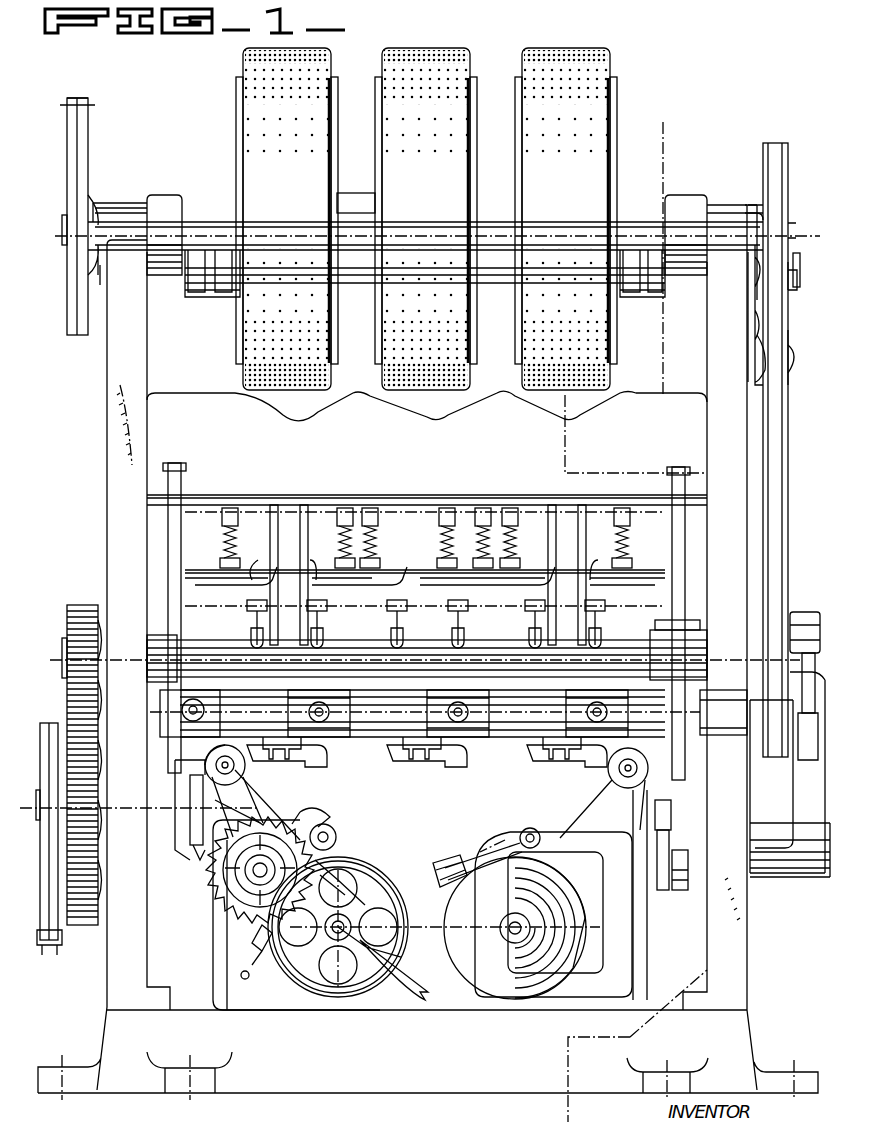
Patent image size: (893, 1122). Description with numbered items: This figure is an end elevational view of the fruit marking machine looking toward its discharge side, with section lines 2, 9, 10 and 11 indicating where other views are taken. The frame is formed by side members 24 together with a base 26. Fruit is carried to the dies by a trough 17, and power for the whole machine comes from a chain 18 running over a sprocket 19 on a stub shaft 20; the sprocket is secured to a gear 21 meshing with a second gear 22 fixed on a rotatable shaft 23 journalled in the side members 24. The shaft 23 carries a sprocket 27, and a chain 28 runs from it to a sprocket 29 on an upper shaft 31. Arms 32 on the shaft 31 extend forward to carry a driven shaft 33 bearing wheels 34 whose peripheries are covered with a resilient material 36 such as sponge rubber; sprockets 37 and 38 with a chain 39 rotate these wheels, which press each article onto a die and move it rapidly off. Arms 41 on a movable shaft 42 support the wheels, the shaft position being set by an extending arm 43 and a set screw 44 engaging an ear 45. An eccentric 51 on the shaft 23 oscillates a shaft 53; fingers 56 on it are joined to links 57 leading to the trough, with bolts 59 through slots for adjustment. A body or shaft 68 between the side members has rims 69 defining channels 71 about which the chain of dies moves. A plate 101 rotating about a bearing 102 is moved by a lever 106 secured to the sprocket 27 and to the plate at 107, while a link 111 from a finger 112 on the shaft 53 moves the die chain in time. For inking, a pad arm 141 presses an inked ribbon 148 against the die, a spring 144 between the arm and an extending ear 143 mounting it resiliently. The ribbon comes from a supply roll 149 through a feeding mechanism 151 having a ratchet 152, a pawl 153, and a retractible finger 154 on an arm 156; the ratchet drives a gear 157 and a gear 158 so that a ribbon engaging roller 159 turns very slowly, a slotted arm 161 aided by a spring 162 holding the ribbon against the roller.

The section line 2 is at (663, 117).
The section line 9 is at (690, 480).
The section line 10 is at (448, 670).
The section line 11 is at (208, 672).
The trough 17 is at (440, 467).
The chain 18 is at (48, 930).
The sprocket 19 is at (50, 723).
The stub shaft 20 is at (150, 820).
The gear 21 is at (94, 910).
The second gear 22 is at (78, 607).
The rotatable shaft 23 is at (357, 655).
The side members 24 is at (107, 470).
The base 26 is at (424, 1080).
The sprocket 27 is at (702, 715).
The chain 28 is at (788, 450).
The sprocket 29 is at (774, 150).
The shaft 31 is at (630, 222).
The arms 32 is at (160, 200).
The driven shaft 33 is at (348, 210).
The wheels 34 is at (522, 118).
The resilient material 36 is at (535, 147).
The sprocket 37 is at (82, 190).
The sprocket 38 is at (76, 105).
The chain 39 is at (78, 123).
The arms 41 is at (208, 297).
The movable shaft 42 is at (362, 283).
The extending arm 43 is at (788, 335).
The set screw 44 is at (757, 345).
The ear 45 is at (790, 370).
The eccentric 51 is at (652, 625).
The shaft 53 is at (495, 737).
The fingers 56 is at (165, 740).
The links 57 is at (168, 530).
The bolts 59 is at (160, 705).
The body or shaft 68 is at (638, 595).
The rims 69 is at (310, 580).
The channels 71 is at (283, 580).
The plate 101 is at (800, 792).
The bearing 102 is at (815, 865).
The lever 106 is at (804, 615).
The connection point 107 is at (805, 690).
The link 111 is at (682, 890).
The finger 112 is at (662, 890).
The pad arm 141 is at (540, 728).
The extending ear 143 is at (565, 768).
The spring 144 is at (423, 768).
The inked ribbon 148 is at (375, 737).
The supply roll 149 is at (565, 885).
The feeding mechanism 151 is at (298, 800).
The ratchet 152 is at (215, 876).
The pawl 153 is at (305, 822).
The retractible finger 154 is at (205, 796).
The arm 156 is at (180, 760).
The gear 157 is at (235, 882).
The gear 158 is at (385, 893).
The ribbon engaging roller 159 is at (338, 945).
The slotted arm 161 is at (375, 888).
The spring 162 is at (262, 940).